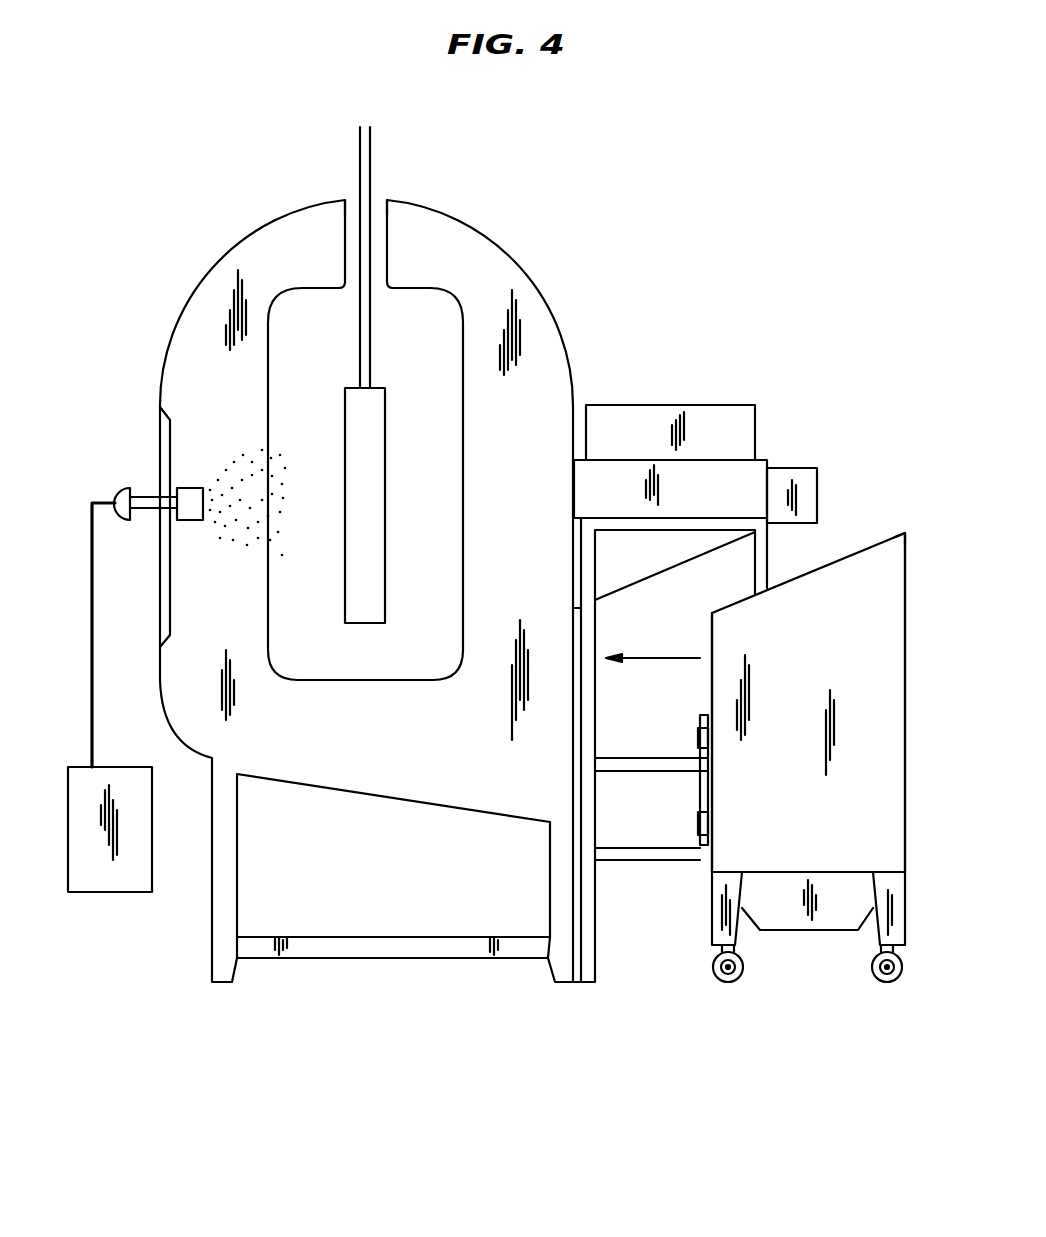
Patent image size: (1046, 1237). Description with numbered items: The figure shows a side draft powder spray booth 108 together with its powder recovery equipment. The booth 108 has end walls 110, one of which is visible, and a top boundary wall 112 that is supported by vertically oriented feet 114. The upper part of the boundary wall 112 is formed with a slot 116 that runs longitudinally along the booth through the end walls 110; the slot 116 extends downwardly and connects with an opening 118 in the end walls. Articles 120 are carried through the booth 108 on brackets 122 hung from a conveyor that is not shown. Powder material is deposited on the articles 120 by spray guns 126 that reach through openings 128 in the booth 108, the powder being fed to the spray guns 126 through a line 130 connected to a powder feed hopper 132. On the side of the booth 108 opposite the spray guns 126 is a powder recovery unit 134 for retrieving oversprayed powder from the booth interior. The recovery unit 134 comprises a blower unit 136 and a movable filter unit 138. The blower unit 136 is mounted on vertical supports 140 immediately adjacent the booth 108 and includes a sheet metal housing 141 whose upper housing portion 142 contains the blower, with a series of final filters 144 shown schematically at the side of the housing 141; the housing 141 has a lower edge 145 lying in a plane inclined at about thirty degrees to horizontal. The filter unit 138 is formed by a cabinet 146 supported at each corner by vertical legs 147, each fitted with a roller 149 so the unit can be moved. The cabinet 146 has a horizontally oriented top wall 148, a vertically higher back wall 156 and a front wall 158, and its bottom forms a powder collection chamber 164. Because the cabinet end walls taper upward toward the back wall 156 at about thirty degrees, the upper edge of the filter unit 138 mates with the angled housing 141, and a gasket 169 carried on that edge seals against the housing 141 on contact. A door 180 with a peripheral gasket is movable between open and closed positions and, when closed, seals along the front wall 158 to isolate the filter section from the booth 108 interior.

The side draft powder spray booth 108 is at (600, 229).
The end walls 110 is at (205, 303).
The top boundary wall 112 is at (432, 210).
The feet 114 is at (237, 850).
The slot 116 is at (352, 212).
The opening 118 is at (448, 414).
The articles 120 is at (385, 480).
The brackets 122 is at (372, 147).
The spray guns 126 is at (195, 488).
The openings 128 is at (160, 458).
The line 130 is at (93, 612).
The powder feed hopper 132 is at (102, 893).
The powder recovery unit 134 is at (797, 380).
The blower unit 136 is at (736, 368).
The movable filter unit 138 is at (922, 498).
The vertical supports 140 is at (767, 558).
The sheet metal housing 141 is at (603, 568).
The upper housing portion 142 is at (645, 404).
The final filters 144 is at (795, 467).
The lower edge 145 is at (648, 590).
The cabinet 146 is at (880, 700).
The vertical legs 147 is at (712, 937).
The top wall 148 is at (833, 576).
The roller 149 is at (732, 983).
The back wall 156 is at (904, 635).
The front wall 158 is at (712, 690).
The powder collection chamber 164 is at (805, 932).
The gasket 169 is at (887, 533).
The door 180 is at (712, 785).